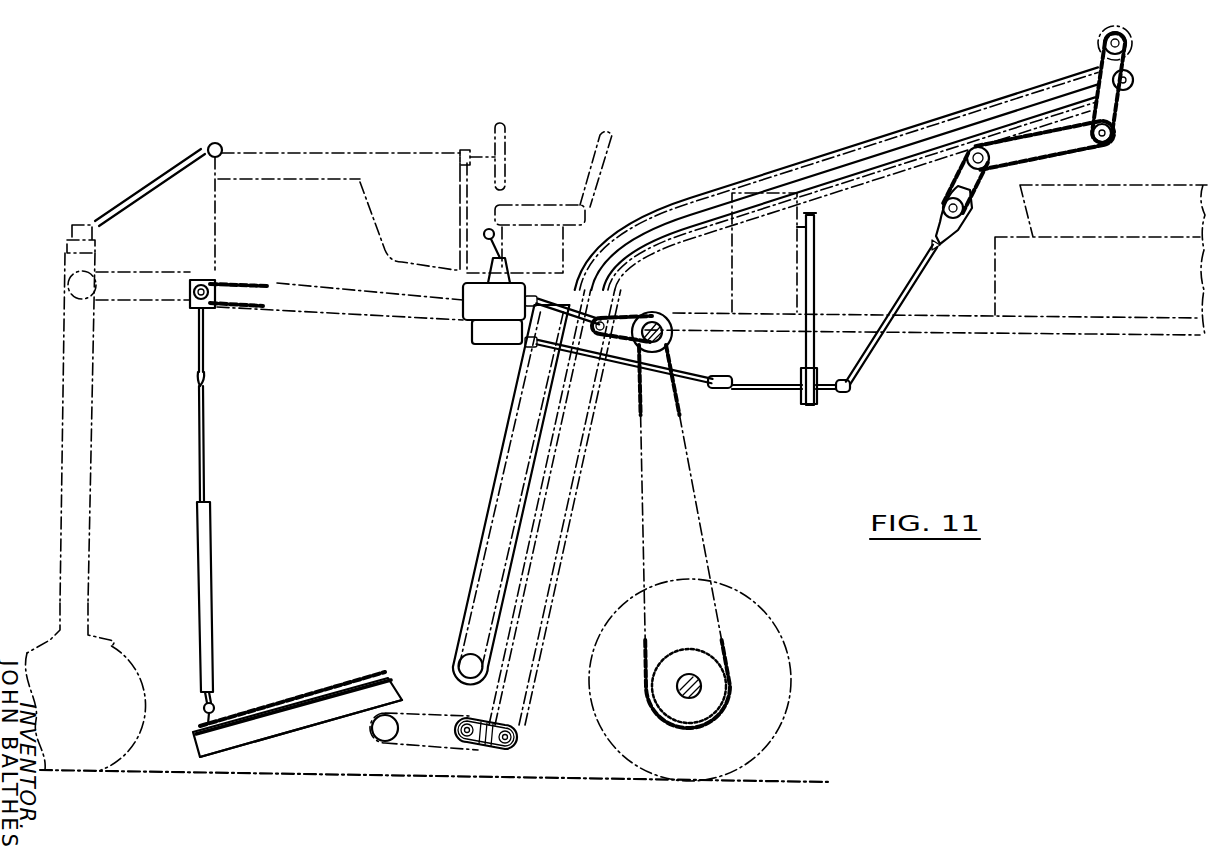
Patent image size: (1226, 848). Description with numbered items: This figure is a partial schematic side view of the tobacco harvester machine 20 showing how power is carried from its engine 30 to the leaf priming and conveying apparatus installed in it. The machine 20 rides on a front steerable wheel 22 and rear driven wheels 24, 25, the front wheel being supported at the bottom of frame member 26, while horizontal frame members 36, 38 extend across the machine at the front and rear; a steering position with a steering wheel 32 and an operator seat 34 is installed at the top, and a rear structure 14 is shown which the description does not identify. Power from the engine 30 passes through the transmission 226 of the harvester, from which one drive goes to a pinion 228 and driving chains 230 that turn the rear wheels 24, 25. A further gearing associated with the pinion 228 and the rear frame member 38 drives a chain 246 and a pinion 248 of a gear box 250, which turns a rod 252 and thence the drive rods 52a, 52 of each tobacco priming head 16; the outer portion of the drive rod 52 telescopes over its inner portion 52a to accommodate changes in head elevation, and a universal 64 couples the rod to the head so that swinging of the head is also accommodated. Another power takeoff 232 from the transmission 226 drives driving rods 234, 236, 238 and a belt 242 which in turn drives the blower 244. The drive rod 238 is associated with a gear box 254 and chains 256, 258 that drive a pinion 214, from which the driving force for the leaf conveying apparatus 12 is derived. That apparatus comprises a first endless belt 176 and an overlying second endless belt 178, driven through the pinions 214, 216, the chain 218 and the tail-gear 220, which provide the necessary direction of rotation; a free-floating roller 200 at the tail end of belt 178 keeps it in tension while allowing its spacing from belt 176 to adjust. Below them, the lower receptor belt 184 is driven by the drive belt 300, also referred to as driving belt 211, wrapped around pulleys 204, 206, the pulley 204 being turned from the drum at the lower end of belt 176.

The leaf conveying apparatus 12 is at (836, 127).
The rear attachment 14 is at (1165, 186).
The tobacco priming head 16 is at (297, 700).
The tobacco harvester machine 20 is at (138, 162).
The front steerable wheel 22 is at (118, 656).
The rear driven wheel 24 is at (707, 676).
The rear driven wheel 25 is at (687, 684).
The frame member 26 is at (62, 428).
The engine 30 is at (364, 188).
The steering wheel 32 is at (506, 128).
The operator seat 34 is at (592, 148).
The horizontal frame member 36 is at (62, 292).
The rear horizontal frame member 38 is at (670, 342).
The driving rod 52 is at (213, 578).
The inner portion of drive rod 52a is at (206, 440).
The universal 64 is at (202, 710).
The first endless belt 176 is at (560, 538).
The second endless belt 178 is at (482, 536).
The lower receptor belt 184 is at (390, 742).
The roller 200 is at (463, 659).
The pulley 204 is at (517, 736).
The pulley 206 is at (466, 716).
The driving belt 211 is at (366, 729).
The pinion 214 is at (1114, 134).
The pinion 216 is at (1135, 80).
The chain 218 is at (1118, 111).
The tail-gear 220 is at (1128, 45).
The transmission 226 is at (466, 342).
The pinion 228 is at (642, 320).
The driving chains 230 is at (688, 385).
The power takeoff 232 is at (528, 348).
The driving rod 234 is at (617, 365).
The driving rod 236 is at (762, 384).
The drive rod 238 is at (876, 350).
The belt 242 is at (815, 274).
The blower 244 is at (786, 299).
The chain 246 is at (232, 282).
The pinion 248 is at (262, 292).
The gear box 250 is at (200, 281).
The rod 252 is at (206, 352).
The gear box 254 is at (946, 228).
The chain 256 is at (975, 190).
The chain 258 is at (1072, 152).
The drive belt 300 is at (473, 750).